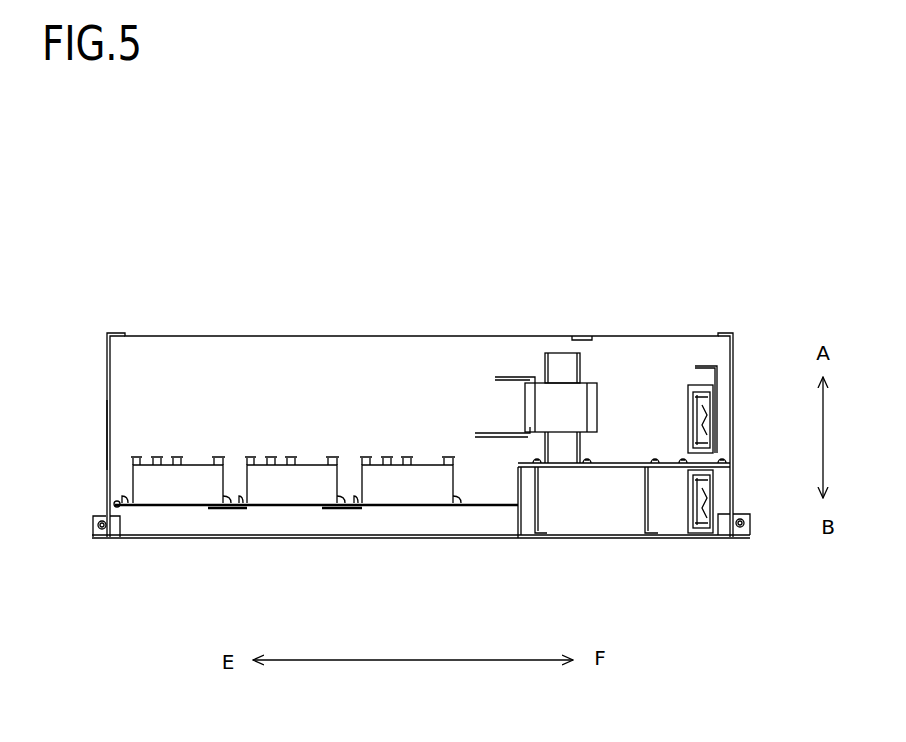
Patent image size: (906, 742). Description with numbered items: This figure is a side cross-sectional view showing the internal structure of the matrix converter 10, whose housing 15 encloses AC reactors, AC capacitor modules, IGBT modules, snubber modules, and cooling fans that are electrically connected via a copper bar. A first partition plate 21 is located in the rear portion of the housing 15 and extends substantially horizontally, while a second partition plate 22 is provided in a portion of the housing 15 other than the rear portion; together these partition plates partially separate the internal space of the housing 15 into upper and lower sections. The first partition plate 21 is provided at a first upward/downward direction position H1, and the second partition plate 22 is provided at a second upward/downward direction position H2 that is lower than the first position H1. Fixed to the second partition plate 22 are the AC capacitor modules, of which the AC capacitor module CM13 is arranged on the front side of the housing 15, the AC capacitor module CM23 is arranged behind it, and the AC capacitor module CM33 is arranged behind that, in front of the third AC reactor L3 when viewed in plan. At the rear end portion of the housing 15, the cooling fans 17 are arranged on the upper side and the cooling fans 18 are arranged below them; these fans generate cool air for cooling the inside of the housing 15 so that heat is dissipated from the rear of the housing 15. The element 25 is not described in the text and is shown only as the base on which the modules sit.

The matrix converter 10 is at (130, 230).
The housing 15 is at (106, 425).
The cooling fans 17 is at (708, 417).
The cooling fans 18 is at (708, 498).
The first partition plate 21 is at (607, 470).
The second partition plate 22 is at (488, 505).
The circuit board 25 is at (453, 538).
The AC capacitor module CM13 is at (172, 490).
The AC capacitor module CM23 is at (282, 490).
The AC capacitor module CM33 is at (395, 490).
The third AC reactor L3 is at (578, 407).
The first upward/downward direction position H1 is at (742, 465).
The second upward/downward direction position H2 is at (103, 503).